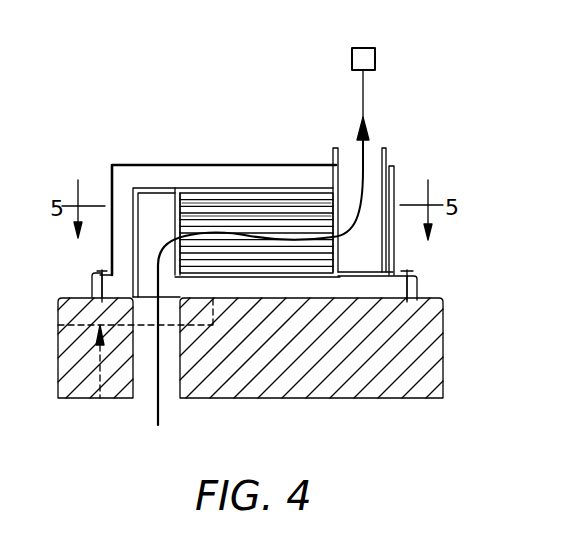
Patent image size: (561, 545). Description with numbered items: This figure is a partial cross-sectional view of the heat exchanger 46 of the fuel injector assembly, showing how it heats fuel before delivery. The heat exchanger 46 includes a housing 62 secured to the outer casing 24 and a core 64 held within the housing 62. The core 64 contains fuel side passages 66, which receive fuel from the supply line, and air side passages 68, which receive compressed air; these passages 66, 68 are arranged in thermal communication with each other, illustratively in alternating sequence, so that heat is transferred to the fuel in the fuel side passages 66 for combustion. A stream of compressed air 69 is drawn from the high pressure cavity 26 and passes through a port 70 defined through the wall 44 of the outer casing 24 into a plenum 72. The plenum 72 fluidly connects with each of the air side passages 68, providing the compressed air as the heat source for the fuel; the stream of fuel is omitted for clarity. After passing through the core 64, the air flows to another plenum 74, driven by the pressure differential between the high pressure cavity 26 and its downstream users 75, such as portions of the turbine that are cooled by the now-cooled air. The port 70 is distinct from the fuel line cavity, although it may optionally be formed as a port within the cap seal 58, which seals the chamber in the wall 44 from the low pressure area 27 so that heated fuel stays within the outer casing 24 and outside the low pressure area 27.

The outer casing 24 is at (485, 272).
The cavity 26 is at (260, 437).
The low pressure area 27 is at (259, 87).
The wall 44 is at (418, 324).
The heat exchanger 46 is at (122, 94).
The cap seal 58 is at (100, 398).
The housing 62 is at (180, 168).
The core 64 is at (240, 200).
The fuel side passages 66 is at (287, 212).
The air side passages 68 is at (315, 222).
The stream of compressed air 69 is at (158, 425).
The port 70 is at (108, 318).
The plenum 72 is at (158, 211).
The plenum 74 is at (382, 266).
The downstream users 75 is at (376, 53).